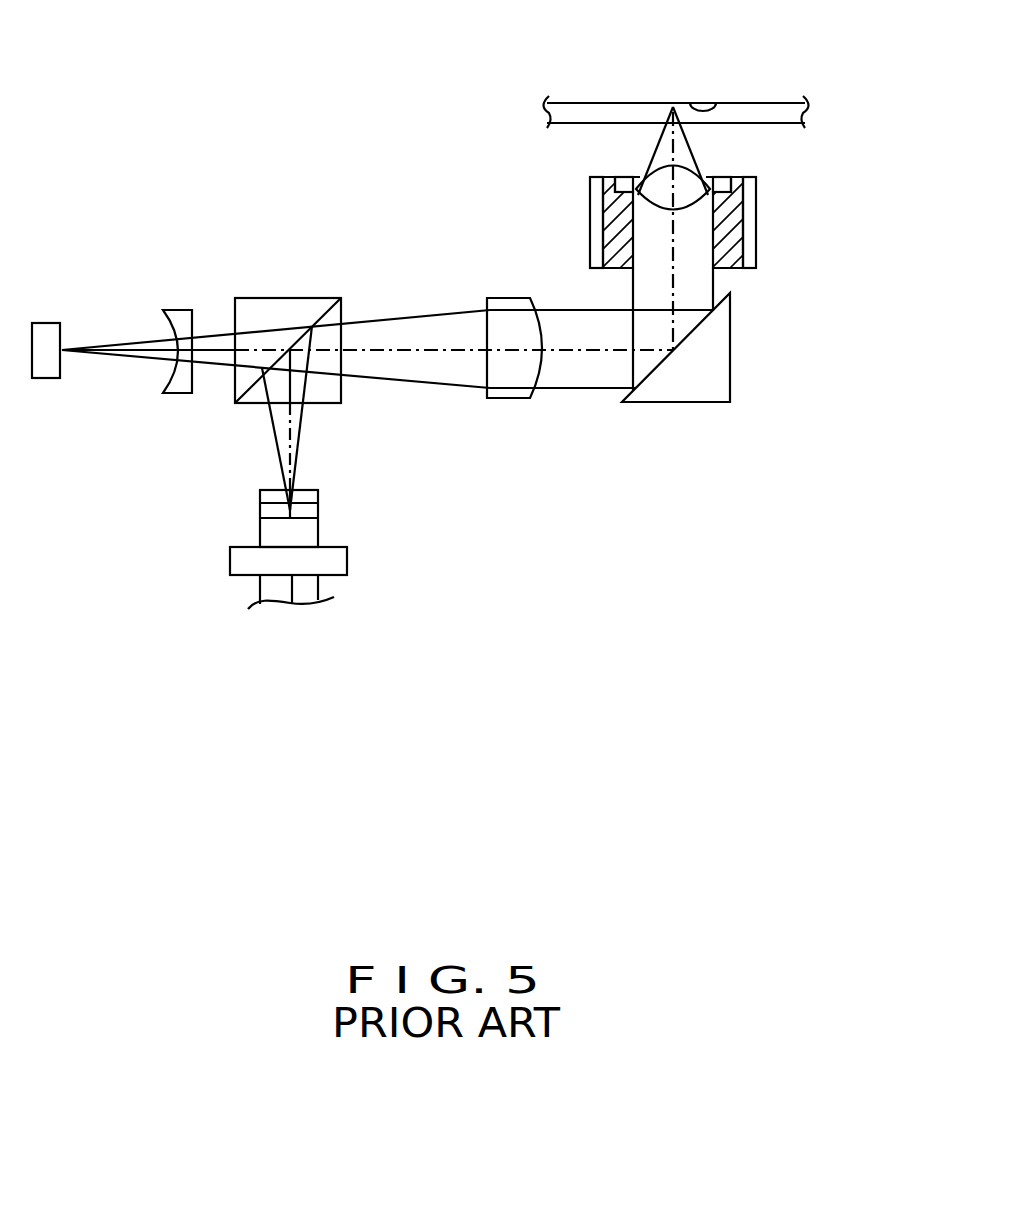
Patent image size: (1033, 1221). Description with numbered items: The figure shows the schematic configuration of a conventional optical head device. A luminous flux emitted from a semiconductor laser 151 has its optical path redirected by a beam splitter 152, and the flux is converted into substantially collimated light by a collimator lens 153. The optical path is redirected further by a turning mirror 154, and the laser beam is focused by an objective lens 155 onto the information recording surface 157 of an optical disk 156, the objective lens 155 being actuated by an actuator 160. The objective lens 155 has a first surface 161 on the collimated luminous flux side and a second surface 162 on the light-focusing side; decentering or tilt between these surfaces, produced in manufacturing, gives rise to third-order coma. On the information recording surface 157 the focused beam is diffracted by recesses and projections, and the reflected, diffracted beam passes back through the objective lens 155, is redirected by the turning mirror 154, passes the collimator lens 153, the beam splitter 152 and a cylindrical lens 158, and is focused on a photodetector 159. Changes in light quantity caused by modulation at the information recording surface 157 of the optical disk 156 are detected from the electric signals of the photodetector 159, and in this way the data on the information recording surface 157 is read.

The semiconductor laser 151 is at (338, 563).
The beam splitter 152 is at (288, 307).
The collimator lens 153 is at (515, 395).
The turning mirror 154 is at (715, 365).
The objective lens 155 is at (713, 177).
The optical disk 156 is at (765, 110).
The information recording surface 157 is at (692, 103).
The cylindrical lens 158 is at (179, 318).
The photodetector 159 is at (47, 337).
The actuator 160 is at (740, 221).
The first surface 161 is at (633, 216).
The second surface 162 is at (655, 167).